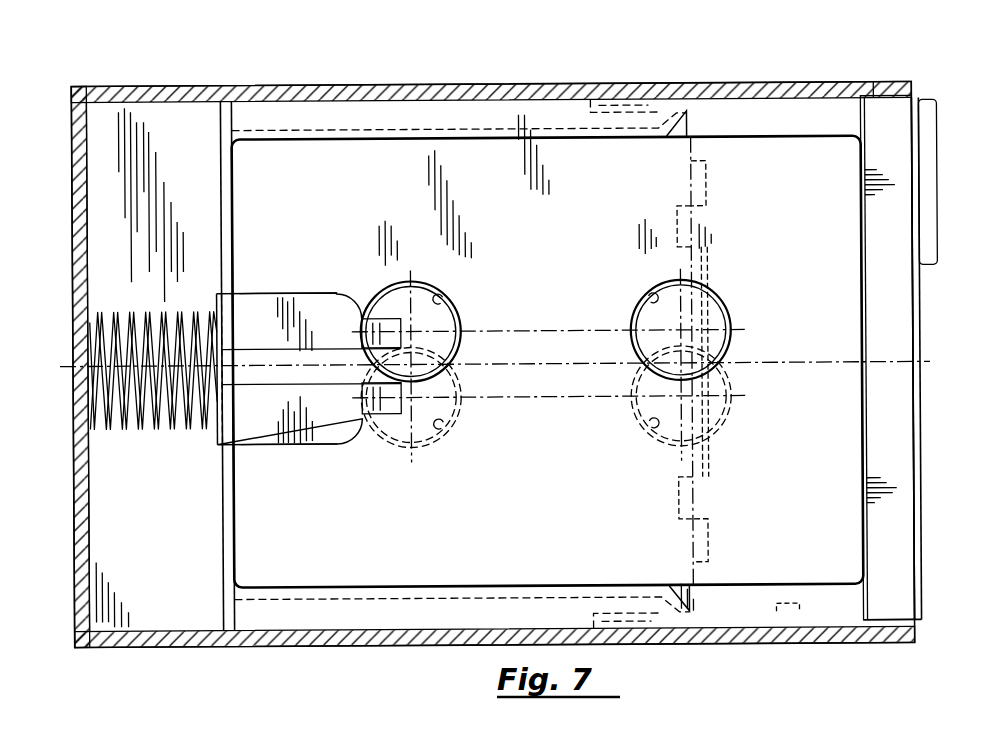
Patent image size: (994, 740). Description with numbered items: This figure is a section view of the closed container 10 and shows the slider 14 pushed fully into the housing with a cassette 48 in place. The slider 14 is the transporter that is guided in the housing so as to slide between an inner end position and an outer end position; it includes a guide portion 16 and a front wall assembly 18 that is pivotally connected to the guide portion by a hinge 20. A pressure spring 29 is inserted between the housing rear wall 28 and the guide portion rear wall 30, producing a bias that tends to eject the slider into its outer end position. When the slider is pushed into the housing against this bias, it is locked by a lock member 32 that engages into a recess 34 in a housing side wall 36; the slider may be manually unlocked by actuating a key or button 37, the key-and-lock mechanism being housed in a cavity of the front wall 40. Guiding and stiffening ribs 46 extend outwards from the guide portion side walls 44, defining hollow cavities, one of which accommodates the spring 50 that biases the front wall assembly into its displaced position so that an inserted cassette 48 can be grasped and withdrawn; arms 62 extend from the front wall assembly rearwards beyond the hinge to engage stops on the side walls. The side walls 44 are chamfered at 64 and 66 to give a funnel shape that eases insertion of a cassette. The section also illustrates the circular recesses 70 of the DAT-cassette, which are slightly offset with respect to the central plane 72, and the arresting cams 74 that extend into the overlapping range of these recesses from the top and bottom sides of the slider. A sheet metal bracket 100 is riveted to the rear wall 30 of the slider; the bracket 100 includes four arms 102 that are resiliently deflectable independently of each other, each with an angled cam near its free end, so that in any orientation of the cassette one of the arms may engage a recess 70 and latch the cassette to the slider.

The housing 10 is at (137, 82).
The slider 14 is at (935, 462).
The guide portion 16 is at (218, 553).
The front wall assembly 18 is at (924, 304).
The hinge 20 is at (693, 497).
The housing rear wall 28 is at (86, 506).
The pressure spring 29 is at (143, 428).
The guide portion rear wall 30 is at (227, 505).
The lock member 32 is at (882, 90).
The recess 34 is at (870, 92).
The housing side wall 36 is at (617, 98).
The key or button 37 is at (926, 201).
The front wall 40 is at (900, 426).
The guide portion side walls 44 is at (378, 136).
The guiding and stiffening ribs 46 is at (318, 110).
The cassette 48 is at (457, 150).
The spring 50 is at (740, 612).
The arms 62 is at (618, 130).
The chamfer 64 is at (418, 118).
The chamfer 66 is at (691, 132).
The circular depressions or recesses 70 is at (443, 300).
The central plane 72 is at (572, 368).
The arresting cams 74 is at (383, 325).
The sheet metal bracket 100 is at (248, 290).
The arms 102 is at (300, 291).